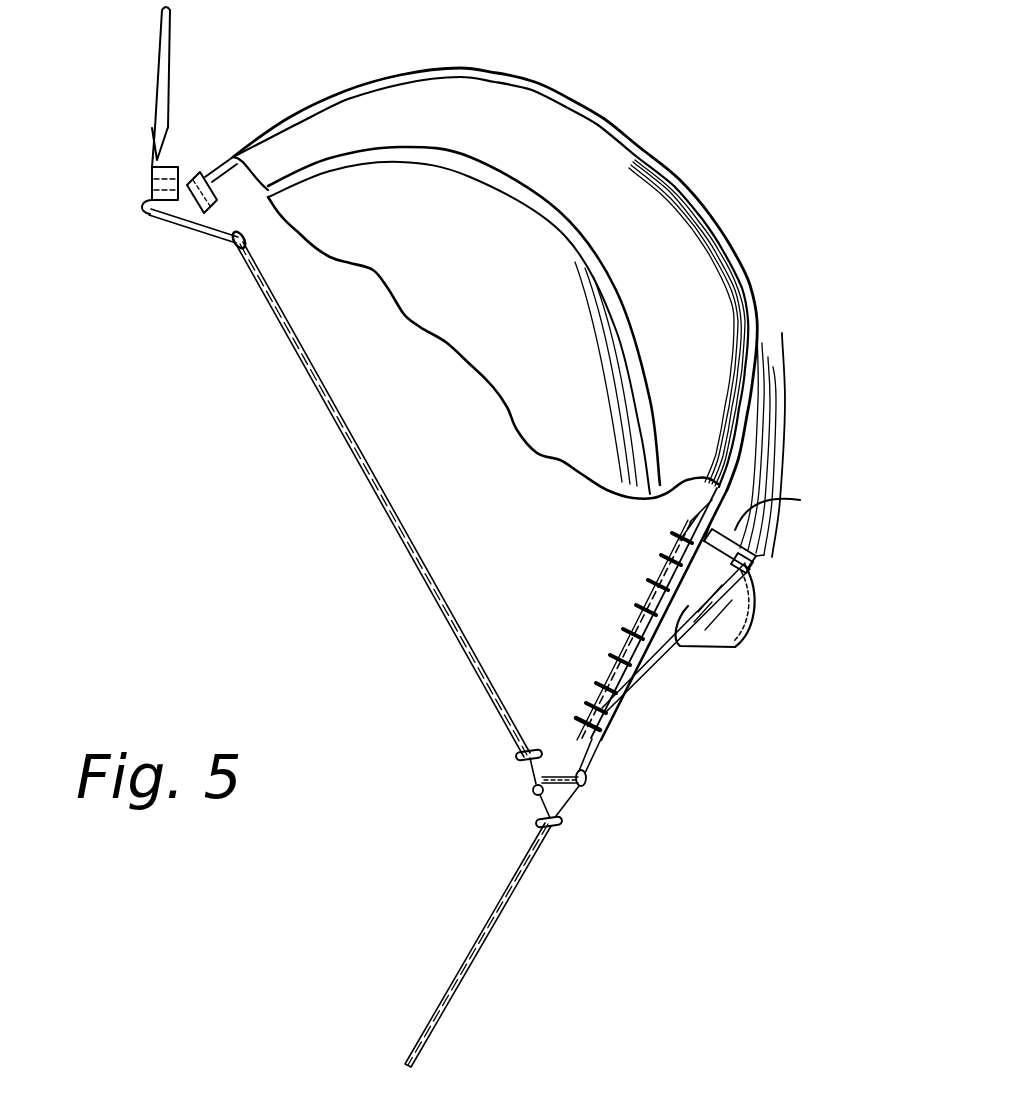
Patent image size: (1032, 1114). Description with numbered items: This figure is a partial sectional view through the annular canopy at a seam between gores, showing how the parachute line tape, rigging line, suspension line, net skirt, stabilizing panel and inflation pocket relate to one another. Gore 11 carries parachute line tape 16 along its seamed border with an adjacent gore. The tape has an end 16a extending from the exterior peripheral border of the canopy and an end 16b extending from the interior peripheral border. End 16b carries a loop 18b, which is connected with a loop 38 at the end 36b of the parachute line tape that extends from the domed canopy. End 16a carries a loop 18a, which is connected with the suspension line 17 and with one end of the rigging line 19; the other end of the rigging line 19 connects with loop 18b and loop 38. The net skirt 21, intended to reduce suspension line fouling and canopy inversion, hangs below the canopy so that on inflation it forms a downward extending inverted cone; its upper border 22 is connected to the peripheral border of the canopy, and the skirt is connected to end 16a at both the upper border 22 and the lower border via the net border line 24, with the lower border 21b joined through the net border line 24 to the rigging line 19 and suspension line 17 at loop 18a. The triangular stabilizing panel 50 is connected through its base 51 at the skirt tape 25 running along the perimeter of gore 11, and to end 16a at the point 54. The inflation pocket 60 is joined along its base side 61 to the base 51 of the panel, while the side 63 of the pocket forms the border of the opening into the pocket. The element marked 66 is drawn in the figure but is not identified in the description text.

The gore 11 is at (775, 436).
The parachute line tape 16 is at (498, 73).
The end of parachute line tape 16a is at (655, 578).
The end of parachute line tape 16b is at (234, 155).
The suspension line 17 is at (520, 870).
The loop 18a is at (583, 782).
The loop 18b is at (197, 187).
The rigging line 19 is at (270, 300).
The net skirt 21 is at (632, 612).
The lower border of net skirt 21b is at (605, 752).
The upper border of net skirt 22 is at (675, 540).
The net border line 24 is at (560, 752).
The skirt tape 25 is at (757, 542).
The end of parachute line tape 36b is at (165, 70).
The loop 38 is at (150, 178).
The triangular stabilizing panel 50 is at (645, 645).
The base of stabilizing panel 51 is at (765, 550).
The connection point 54 is at (615, 703).
The inflation pocket 60 is at (770, 623).
The base side of inflation pocket 61 is at (755, 558).
The side of inflation pocket 63 is at (725, 650).
The loop 66 is at (745, 525).